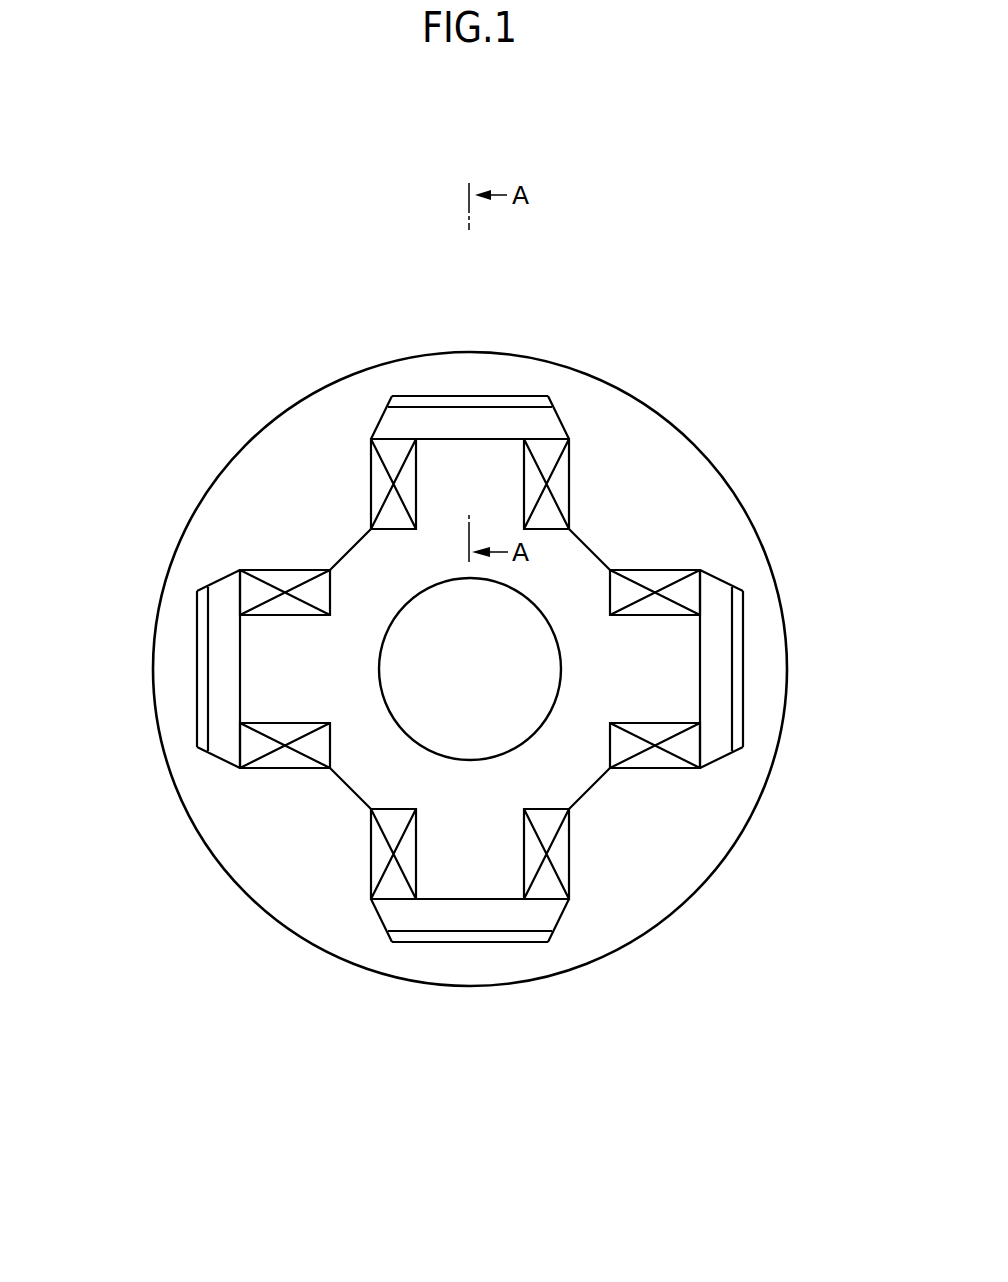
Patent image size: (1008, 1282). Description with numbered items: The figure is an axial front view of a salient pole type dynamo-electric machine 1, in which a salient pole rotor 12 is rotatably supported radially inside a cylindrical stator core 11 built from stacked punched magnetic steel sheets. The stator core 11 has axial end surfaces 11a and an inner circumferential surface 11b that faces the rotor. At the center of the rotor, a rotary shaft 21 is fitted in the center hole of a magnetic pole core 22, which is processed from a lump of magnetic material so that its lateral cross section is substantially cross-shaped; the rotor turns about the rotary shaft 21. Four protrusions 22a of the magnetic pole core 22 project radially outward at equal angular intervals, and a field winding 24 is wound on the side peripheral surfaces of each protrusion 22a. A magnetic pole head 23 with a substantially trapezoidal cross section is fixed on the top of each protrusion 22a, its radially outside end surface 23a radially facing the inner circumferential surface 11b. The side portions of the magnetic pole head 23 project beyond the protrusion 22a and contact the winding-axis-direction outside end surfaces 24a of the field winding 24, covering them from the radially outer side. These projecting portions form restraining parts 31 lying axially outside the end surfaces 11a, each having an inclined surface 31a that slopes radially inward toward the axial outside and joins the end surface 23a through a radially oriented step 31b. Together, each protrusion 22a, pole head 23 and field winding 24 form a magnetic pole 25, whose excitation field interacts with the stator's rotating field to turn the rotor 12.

The dynamo-electric machine 1 is at (677, 248).
The stator core 11 is at (324, 402).
The axial end surface of stator core 11a is at (256, 396).
The inner circumferential surface of stator core 11b is at (230, 465).
The salient pole rotor 12 is at (250, 862).
The rotary shaft 21 is at (528, 610).
The magnetic pole core 22 is at (588, 520).
The protrusion 22a is at (442, 455).
The magnetic pole head 23 is at (455, 377).
The radially outside end surface 23a is at (493, 942).
The field winding 24 is at (570, 458).
The winding-axis-direction outside end surface 24a is at (393, 901).
The magnetic pole 25 is at (497, 366).
The restraining part 31 is at (586, 902).
The inclined surface 31a is at (545, 915).
The step 31b is at (552, 937).